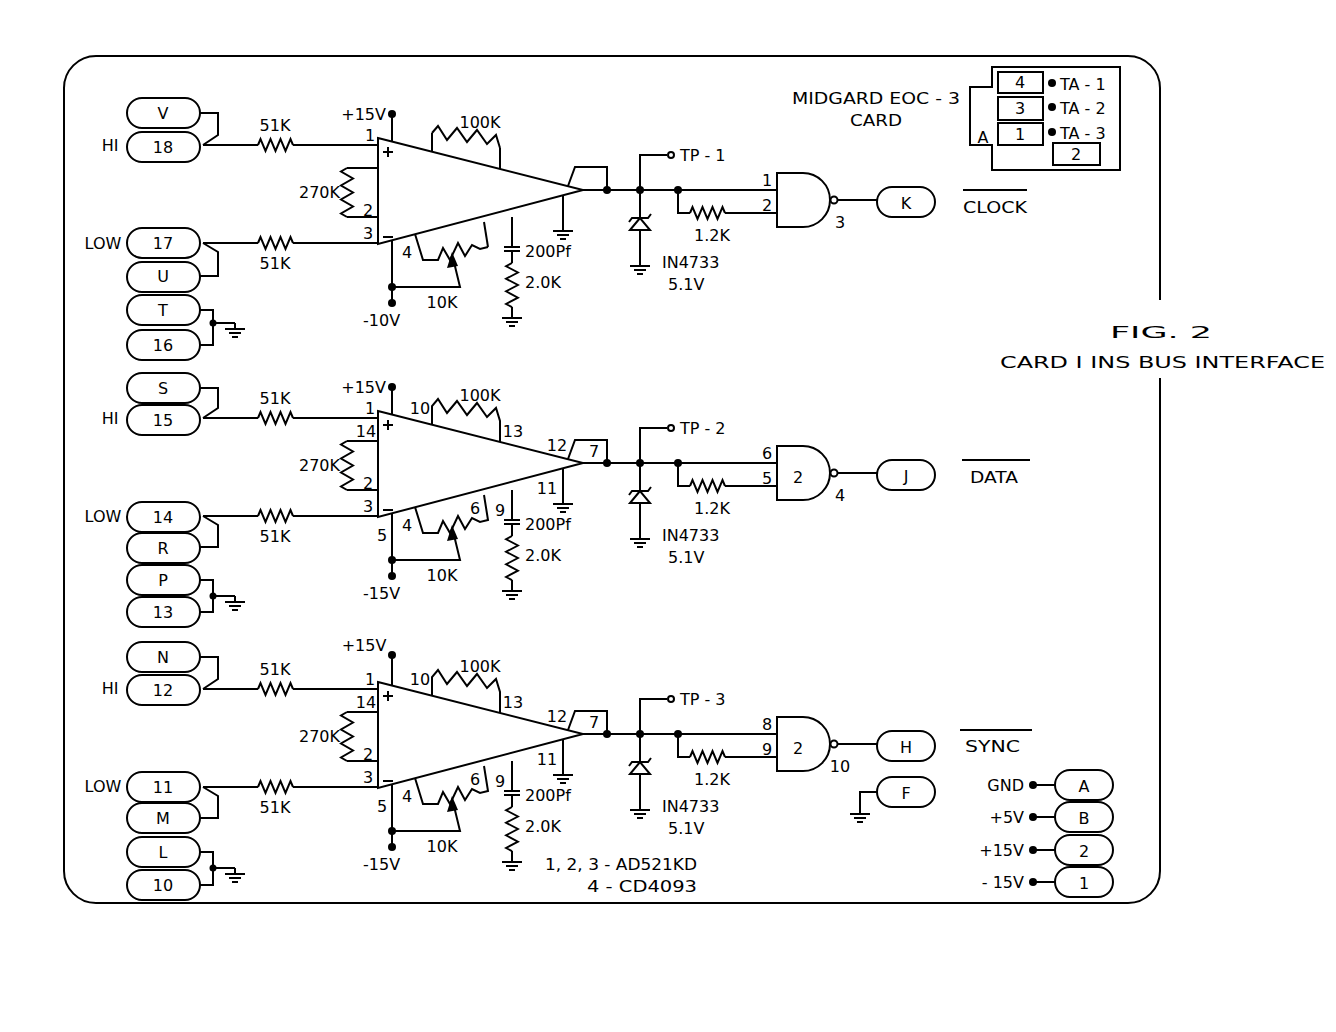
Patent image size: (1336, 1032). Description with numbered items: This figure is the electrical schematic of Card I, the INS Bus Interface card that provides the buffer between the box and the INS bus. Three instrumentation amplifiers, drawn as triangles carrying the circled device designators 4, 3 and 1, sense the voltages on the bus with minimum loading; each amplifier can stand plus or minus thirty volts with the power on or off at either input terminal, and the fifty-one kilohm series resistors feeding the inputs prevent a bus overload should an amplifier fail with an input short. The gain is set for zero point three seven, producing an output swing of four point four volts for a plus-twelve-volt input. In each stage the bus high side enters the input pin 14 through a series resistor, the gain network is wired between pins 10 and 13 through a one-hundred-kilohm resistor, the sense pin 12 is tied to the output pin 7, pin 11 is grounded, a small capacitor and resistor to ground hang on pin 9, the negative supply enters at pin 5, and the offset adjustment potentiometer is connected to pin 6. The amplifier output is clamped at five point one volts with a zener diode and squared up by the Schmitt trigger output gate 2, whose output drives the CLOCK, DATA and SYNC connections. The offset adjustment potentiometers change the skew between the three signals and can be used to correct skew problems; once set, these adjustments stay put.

The instrumentation amplifier AD521KD (sync channel) 1 is at (480, 735).
The NAND gate CD4093 2 is at (807, 200).
The instrumentation amplifier AD521KD (data channel) 3 is at (480, 464).
The instrumentation amplifier AD521KD (clock channel) 4 is at (480, 191).
The amplifier pin 5 negative supply 5 is at (386, 273).
The amplifier pin 6 gain adjust 6 is at (479, 234).
The amplifier pin 7 output 7 is at (598, 178).
The amplifier pin 9 compensation 9 is at (507, 240).
The amplifier pin 10 scale resistor 10 is at (421, 139).
The amplifier pin 11 ground 11 is at (555, 217).
The amplifier pin 12 sense 12 is at (568, 174).
The amplifier pin 13 scale resistor 13 is at (511, 158).
The amplifier pin 14 input 14 is at (362, 158).